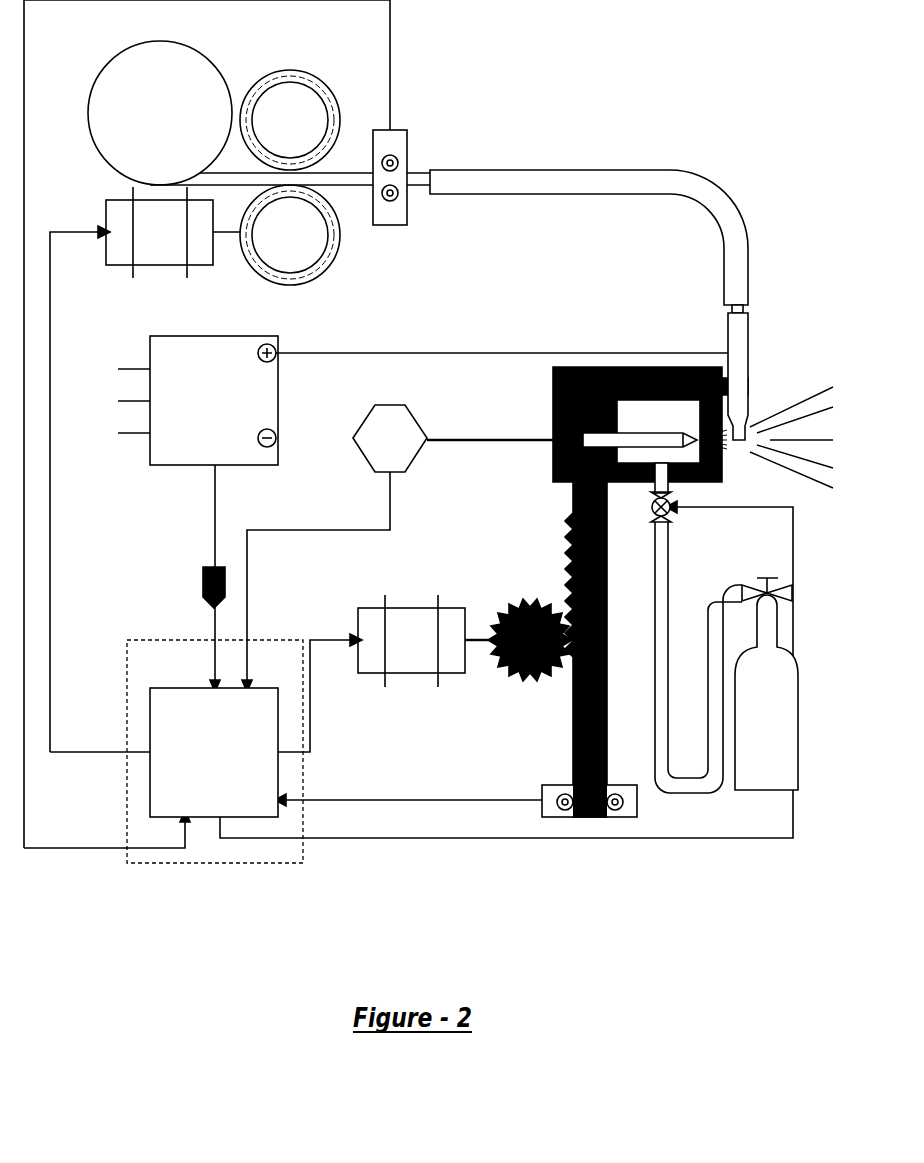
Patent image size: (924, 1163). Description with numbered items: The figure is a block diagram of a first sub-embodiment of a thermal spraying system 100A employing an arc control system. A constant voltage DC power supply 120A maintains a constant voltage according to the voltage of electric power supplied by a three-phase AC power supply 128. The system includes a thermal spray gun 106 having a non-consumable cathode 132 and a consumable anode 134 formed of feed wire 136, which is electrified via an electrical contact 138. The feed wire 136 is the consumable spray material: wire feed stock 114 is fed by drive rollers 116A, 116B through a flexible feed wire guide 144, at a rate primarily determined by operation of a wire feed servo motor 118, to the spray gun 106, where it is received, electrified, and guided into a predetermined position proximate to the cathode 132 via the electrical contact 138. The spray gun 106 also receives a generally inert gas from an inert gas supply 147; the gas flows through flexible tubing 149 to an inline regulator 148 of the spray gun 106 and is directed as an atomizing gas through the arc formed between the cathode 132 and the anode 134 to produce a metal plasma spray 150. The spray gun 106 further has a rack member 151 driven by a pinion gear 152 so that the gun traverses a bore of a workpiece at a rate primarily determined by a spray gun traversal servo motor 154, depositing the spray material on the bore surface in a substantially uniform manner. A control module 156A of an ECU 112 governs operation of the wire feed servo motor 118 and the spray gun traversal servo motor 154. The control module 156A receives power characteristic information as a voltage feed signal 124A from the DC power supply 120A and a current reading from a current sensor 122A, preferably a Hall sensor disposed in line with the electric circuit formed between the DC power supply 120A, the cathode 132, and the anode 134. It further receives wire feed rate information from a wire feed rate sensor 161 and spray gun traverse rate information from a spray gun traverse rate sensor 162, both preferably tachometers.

The thermal spraying system 100A is at (612, 932).
The thermal spray gun 106 is at (530, 416).
The ECU 112 is at (215, 868).
The wire feed stock 114 is at (88, 82).
The drive roller 116A is at (317, 272).
The drive roller 116B is at (290, 66).
The wire feed servo motor 118 is at (107, 213).
The constant voltage DC power supply 120A is at (175, 467).
The current sensor 122A is at (367, 417).
The voltage feed signal 124A is at (203, 597).
The three-phase AC power supply 128 is at (103, 345).
The non-consumable cathode 132 is at (668, 431).
The consumable anode 134 is at (738, 458).
The feed wire 136 is at (342, 185).
The electrical contact 138 is at (747, 363).
The flexible feed wire guide 144 is at (478, 170).
The inert gas supply 147 is at (760, 790).
The inline regulator 148 is at (678, 515).
The flexible tubing 149 is at (678, 796).
The metal plasma spray 150 is at (829, 372).
The rack member 151 is at (565, 552).
The pinion gear 152 is at (493, 620).
The spray gun traversal servo motor 154 is at (448, 673).
The control module 156A is at (172, 688).
The wire feed rate sensor 161 is at (405, 215).
The spray gun traverse rate sensor 162 is at (555, 785).